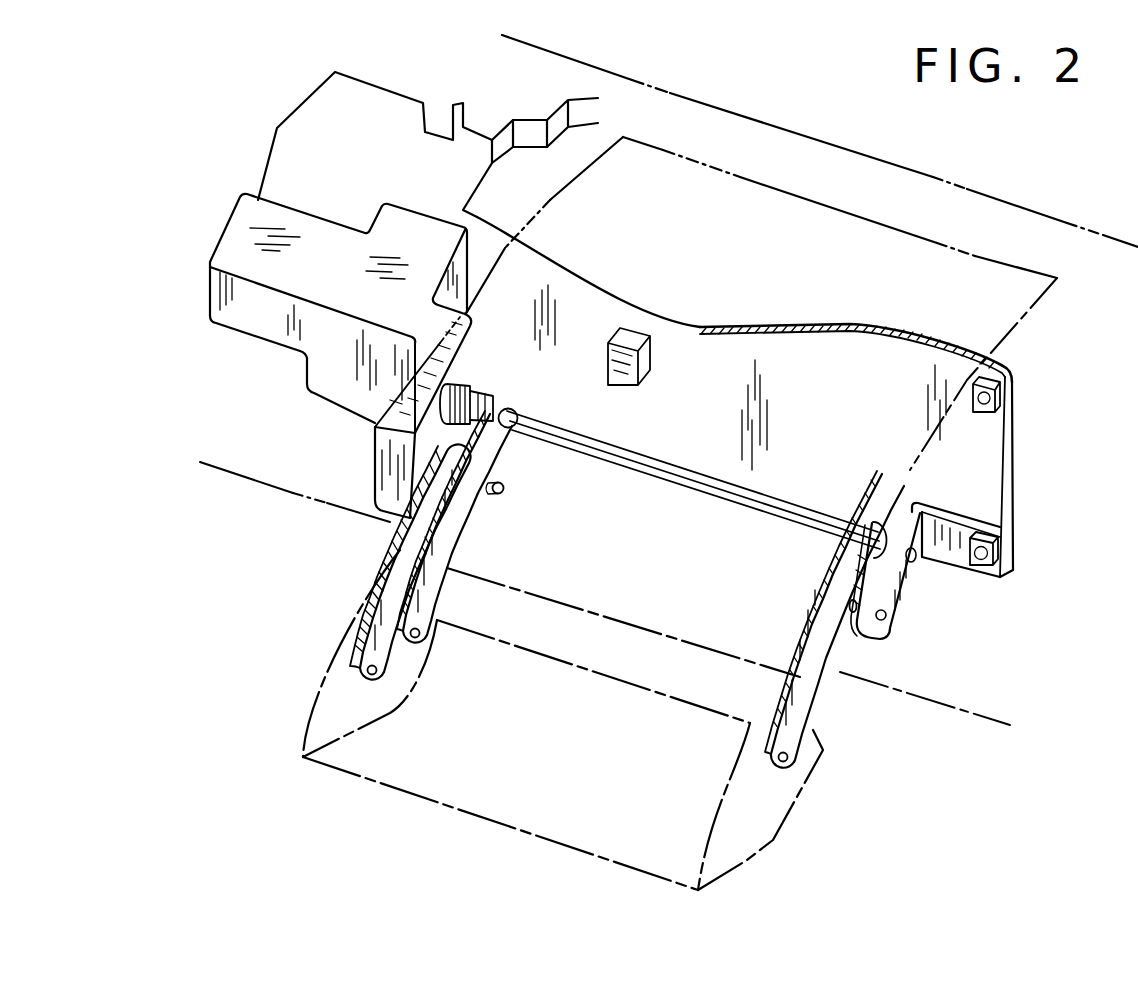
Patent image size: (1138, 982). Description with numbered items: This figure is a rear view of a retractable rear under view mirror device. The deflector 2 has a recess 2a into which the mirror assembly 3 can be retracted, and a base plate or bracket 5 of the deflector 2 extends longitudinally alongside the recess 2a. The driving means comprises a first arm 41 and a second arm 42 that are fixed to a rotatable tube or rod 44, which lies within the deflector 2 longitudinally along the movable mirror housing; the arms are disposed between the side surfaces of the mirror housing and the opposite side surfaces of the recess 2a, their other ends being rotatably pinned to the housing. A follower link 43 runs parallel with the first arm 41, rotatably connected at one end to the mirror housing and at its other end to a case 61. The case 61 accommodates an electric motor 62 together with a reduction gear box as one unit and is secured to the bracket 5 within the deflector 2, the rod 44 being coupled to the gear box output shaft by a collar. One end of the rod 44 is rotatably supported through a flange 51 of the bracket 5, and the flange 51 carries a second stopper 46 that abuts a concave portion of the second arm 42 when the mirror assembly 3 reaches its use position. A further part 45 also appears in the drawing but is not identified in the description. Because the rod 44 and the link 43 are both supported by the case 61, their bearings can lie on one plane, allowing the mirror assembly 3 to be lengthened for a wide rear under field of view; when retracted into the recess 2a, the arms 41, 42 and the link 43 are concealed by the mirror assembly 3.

The deflector 2 is at (997, 197).
The recess 2a is at (717, 213).
The mirror assembly 3 is at (435, 783).
The base plate or bracket 5 is at (870, 387).
The first arm 41 is at (447, 542).
The second arm 42 is at (812, 680).
The follower link 43 is at (366, 613).
The rotatable tube or rod 44 is at (705, 490).
The knob 45 is at (504, 490).
The second stopper 46 is at (848, 607).
The flange 51 is at (895, 585).
The case 61 is at (433, 373).
The electric motor 62 is at (285, 277).